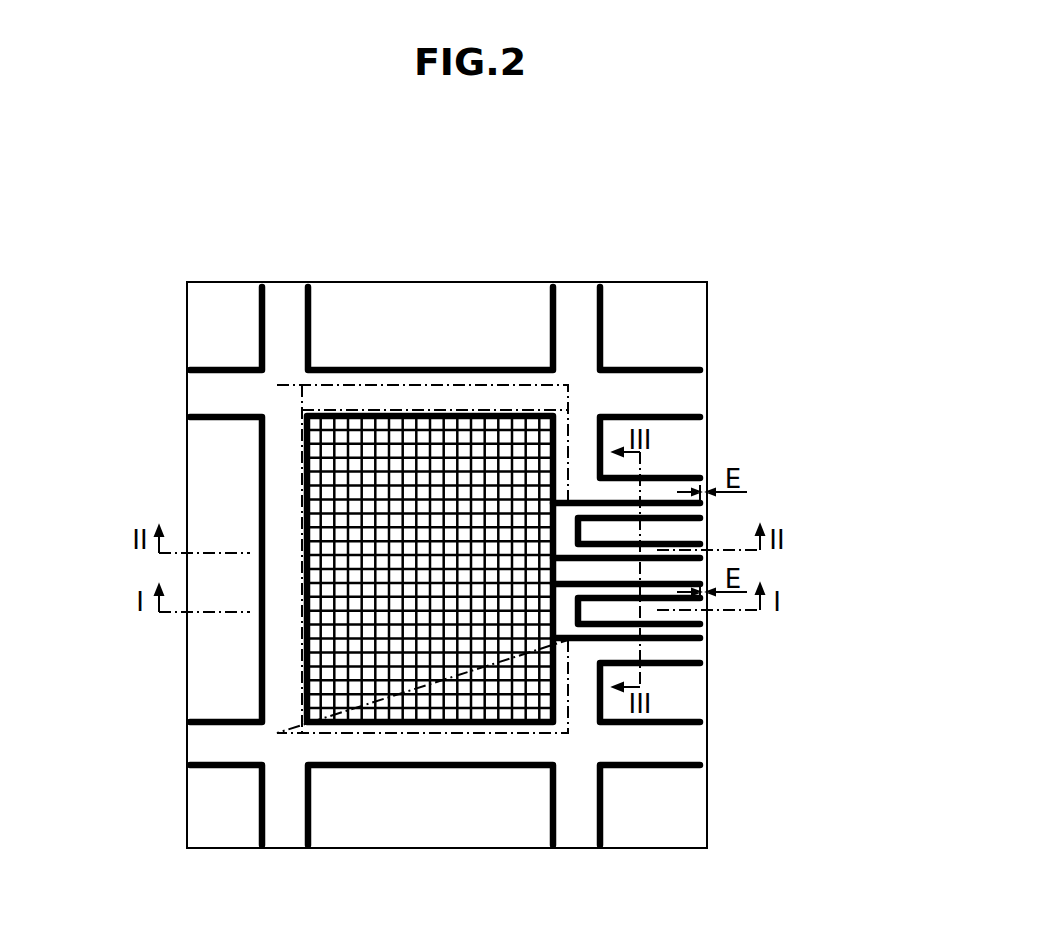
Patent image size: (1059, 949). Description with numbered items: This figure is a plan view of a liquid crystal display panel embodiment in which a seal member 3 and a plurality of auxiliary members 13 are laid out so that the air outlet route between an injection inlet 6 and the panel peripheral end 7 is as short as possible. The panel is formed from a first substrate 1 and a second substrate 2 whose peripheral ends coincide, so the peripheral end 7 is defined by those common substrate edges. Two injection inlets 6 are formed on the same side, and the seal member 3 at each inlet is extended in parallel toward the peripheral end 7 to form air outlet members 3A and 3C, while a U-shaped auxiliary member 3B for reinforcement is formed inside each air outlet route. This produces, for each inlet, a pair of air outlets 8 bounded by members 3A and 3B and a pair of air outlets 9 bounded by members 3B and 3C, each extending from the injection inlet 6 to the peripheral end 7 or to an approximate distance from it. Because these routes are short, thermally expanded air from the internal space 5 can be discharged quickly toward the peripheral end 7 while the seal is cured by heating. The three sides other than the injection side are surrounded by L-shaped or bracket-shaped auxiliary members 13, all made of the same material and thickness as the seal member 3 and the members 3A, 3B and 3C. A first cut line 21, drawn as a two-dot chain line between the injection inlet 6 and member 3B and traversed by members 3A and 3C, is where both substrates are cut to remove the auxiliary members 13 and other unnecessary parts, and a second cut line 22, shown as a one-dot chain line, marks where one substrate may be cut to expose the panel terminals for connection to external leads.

The first substrate 1 is at (497, 563).
The second substrate 2 is at (708, 293).
The seal member 3 is at (556, 418).
The air outlet member 3A is at (668, 477).
The auxiliary member for reinforcement of the air outlet 3B is at (673, 520).
The air outlet member 3C is at (650, 500).
The internal space 5 is at (460, 477).
The injection inlet 6 is at (560, 512).
The panel peripheral end 7 is at (708, 745).
The air outlet 8 is at (693, 512).
The air outlet 9 is at (658, 551).
The auxiliary member 13 is at (388, 370).
The first cut line 21 is at (346, 384).
The second cut line 22 is at (440, 410).